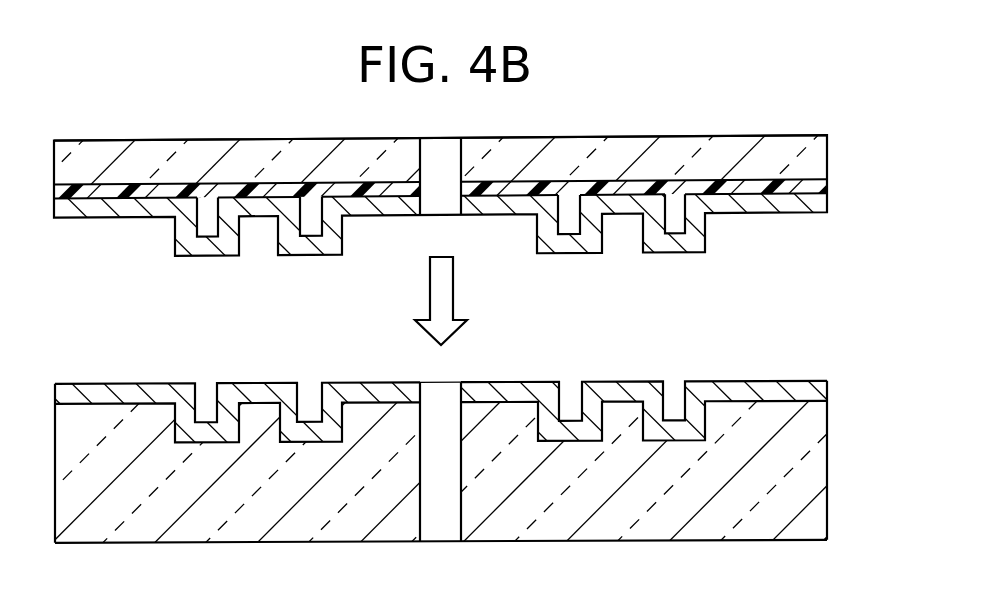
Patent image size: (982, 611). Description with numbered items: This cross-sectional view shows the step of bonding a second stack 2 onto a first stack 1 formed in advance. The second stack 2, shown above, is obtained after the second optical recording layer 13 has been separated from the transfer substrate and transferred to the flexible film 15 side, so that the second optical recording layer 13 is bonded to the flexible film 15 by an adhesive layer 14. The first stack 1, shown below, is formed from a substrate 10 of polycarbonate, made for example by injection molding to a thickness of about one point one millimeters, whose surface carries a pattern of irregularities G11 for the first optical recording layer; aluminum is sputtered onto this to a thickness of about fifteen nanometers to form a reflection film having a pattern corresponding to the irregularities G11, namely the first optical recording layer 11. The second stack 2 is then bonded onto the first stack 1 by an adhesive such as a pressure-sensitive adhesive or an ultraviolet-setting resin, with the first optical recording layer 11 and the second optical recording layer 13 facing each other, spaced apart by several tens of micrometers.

The first stack 1 is at (491, 473).
The substrate 10 is at (803, 482).
The first optical recording layer 11 is at (803, 392).
The second stack 2 is at (464, 198).
The second optical recording layer 13 is at (892, 135).
The adhesive layer 14 is at (803, 190).
The flexible film 15 is at (800, 153).
The pattern of irregularities G11 is at (476, 479).